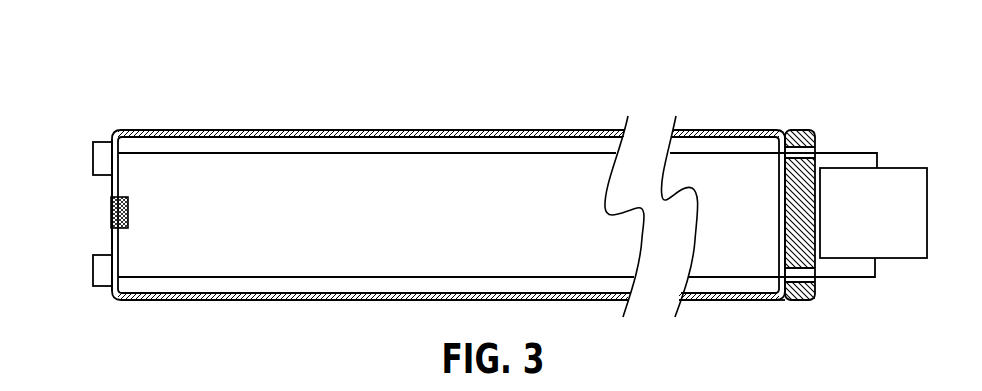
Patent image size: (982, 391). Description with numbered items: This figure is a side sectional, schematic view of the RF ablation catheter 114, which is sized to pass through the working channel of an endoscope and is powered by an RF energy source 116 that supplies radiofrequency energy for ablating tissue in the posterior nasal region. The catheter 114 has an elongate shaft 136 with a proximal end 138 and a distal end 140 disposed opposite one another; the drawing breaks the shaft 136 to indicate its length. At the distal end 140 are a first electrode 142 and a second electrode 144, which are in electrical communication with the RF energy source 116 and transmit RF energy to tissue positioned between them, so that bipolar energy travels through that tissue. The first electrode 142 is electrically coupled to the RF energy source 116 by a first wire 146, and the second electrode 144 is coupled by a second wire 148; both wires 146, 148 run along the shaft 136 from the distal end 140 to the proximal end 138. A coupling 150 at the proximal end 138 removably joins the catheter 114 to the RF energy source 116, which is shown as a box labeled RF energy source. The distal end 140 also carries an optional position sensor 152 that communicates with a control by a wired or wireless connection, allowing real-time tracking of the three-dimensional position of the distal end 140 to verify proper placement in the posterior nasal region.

The RF ablation catheter 114 is at (114, 54).
The RF energy source 116 is at (905, 259).
The shaft 136 is at (403, 130).
The proximal end 138 is at (786, 300).
The distal end 140 is at (112, 188).
The first electrode 142 is at (105, 142).
The second electrode 144 is at (102, 286).
The first wire 146 is at (270, 153).
The second wire 148 is at (257, 277).
The coupling 150 is at (802, 130).
The position sensor 152 is at (111, 213).